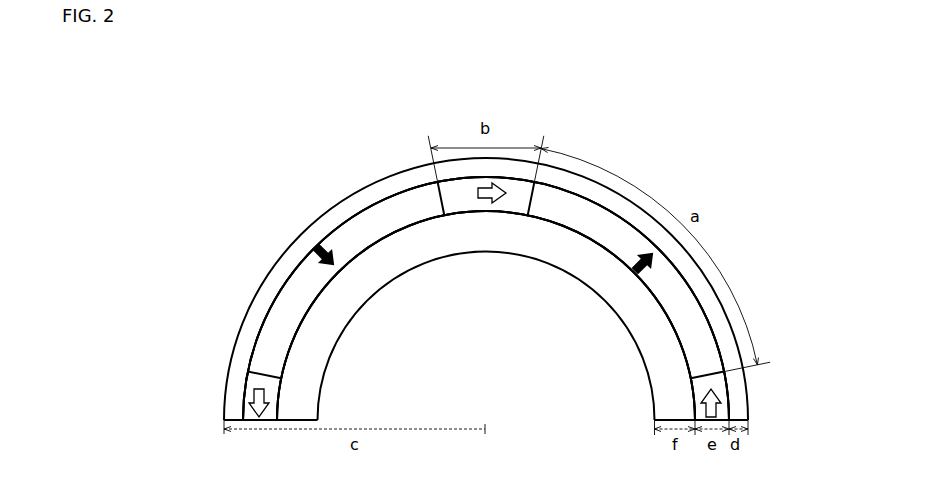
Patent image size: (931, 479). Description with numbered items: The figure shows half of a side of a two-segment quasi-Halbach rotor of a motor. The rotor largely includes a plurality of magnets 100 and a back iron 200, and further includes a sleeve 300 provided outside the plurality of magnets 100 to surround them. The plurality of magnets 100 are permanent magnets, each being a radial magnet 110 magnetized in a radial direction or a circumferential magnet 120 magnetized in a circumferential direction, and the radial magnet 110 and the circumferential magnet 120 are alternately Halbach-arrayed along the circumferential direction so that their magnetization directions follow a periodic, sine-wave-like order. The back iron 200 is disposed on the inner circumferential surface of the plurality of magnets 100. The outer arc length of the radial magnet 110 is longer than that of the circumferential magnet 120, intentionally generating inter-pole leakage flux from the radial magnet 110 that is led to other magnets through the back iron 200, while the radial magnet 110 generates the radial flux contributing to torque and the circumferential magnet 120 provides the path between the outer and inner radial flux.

The plurality of magnets 100 is at (486, 233).
The radial magnet 110 is at (570, 207).
The circumferential magnet 120 is at (700, 388).
The back iron 200 is at (593, 278).
The sleeve 300 is at (250, 337).